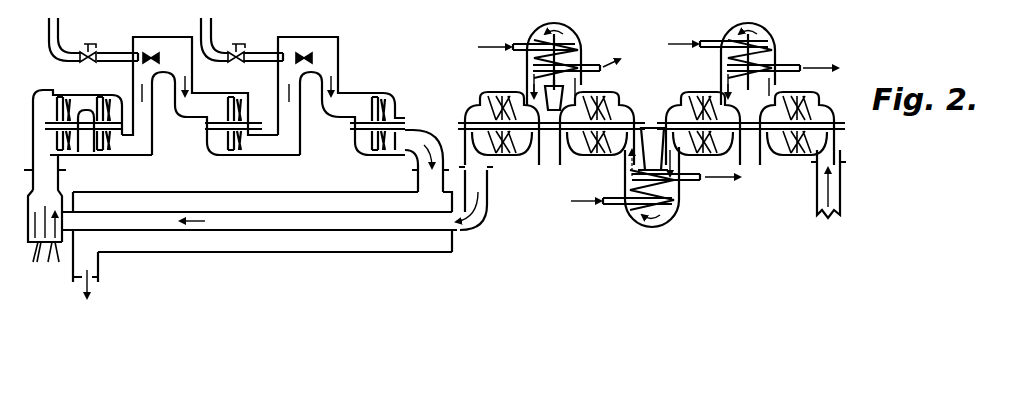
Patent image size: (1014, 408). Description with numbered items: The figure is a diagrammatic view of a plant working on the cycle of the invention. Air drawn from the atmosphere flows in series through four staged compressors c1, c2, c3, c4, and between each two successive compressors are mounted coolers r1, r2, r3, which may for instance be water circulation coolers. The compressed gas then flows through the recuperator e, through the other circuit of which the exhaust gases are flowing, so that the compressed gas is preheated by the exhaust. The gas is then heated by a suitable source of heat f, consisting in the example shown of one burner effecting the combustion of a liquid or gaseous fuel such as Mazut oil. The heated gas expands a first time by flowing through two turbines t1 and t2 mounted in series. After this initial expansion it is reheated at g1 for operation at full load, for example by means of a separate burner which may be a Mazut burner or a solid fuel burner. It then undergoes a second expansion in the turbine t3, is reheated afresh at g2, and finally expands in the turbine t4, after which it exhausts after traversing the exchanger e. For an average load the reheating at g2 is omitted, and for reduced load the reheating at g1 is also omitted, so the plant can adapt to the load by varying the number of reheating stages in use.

The turbine t1 is at (92, 126).
The turbine t2 is at (103, 107).
The turbine t3 is at (233, 107).
The turbine t4 is at (399, 127).
The reheating point g1 is at (175, 45).
The reheating point g2 is at (303, 79).
The staged compressor c1 is at (502, 114).
The staged compressor c2 is at (597, 116).
The staged compressor c3 is at (703, 116).
The staged compressor c4 is at (803, 143).
The cooler r1 is at (757, 31).
The cooler r2 is at (658, 219).
The cooler r3 is at (566, 31).
The recuperator e is at (259, 245).
The source of heat f is at (40, 208).